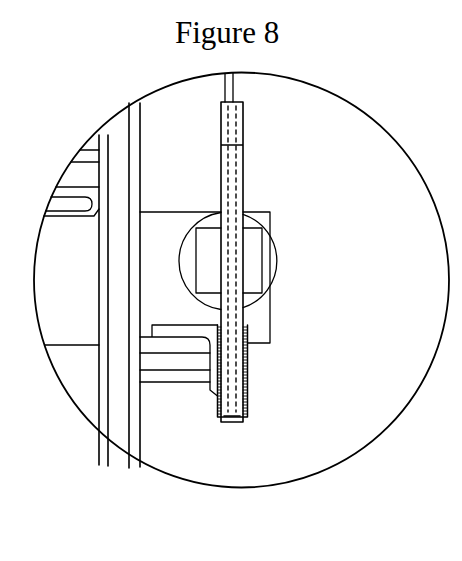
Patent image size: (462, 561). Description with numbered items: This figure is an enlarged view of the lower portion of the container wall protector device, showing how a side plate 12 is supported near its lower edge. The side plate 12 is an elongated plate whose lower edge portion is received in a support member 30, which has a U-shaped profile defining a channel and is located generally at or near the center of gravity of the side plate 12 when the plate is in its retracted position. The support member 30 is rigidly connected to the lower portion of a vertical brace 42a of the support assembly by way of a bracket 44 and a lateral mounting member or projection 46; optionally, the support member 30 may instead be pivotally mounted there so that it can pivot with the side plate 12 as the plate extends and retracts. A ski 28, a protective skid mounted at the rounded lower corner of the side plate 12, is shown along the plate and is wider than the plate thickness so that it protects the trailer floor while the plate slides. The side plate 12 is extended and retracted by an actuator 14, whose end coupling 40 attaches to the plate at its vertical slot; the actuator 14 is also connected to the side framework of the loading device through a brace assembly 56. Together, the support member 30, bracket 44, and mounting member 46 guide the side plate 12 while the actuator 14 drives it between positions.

The side plate 12 is at (233, 87).
The ski 28 is at (243, 157).
The end coupling 40 is at (197, 253).
The actuator 14 is at (278, 262).
The vertical brace 42a is at (140, 137).
The brace assembly 56 is at (183, 187).
The bracket 44 is at (185, 323).
The lateral mounting member 46 is at (187, 381).
The support member 30 is at (248, 378).